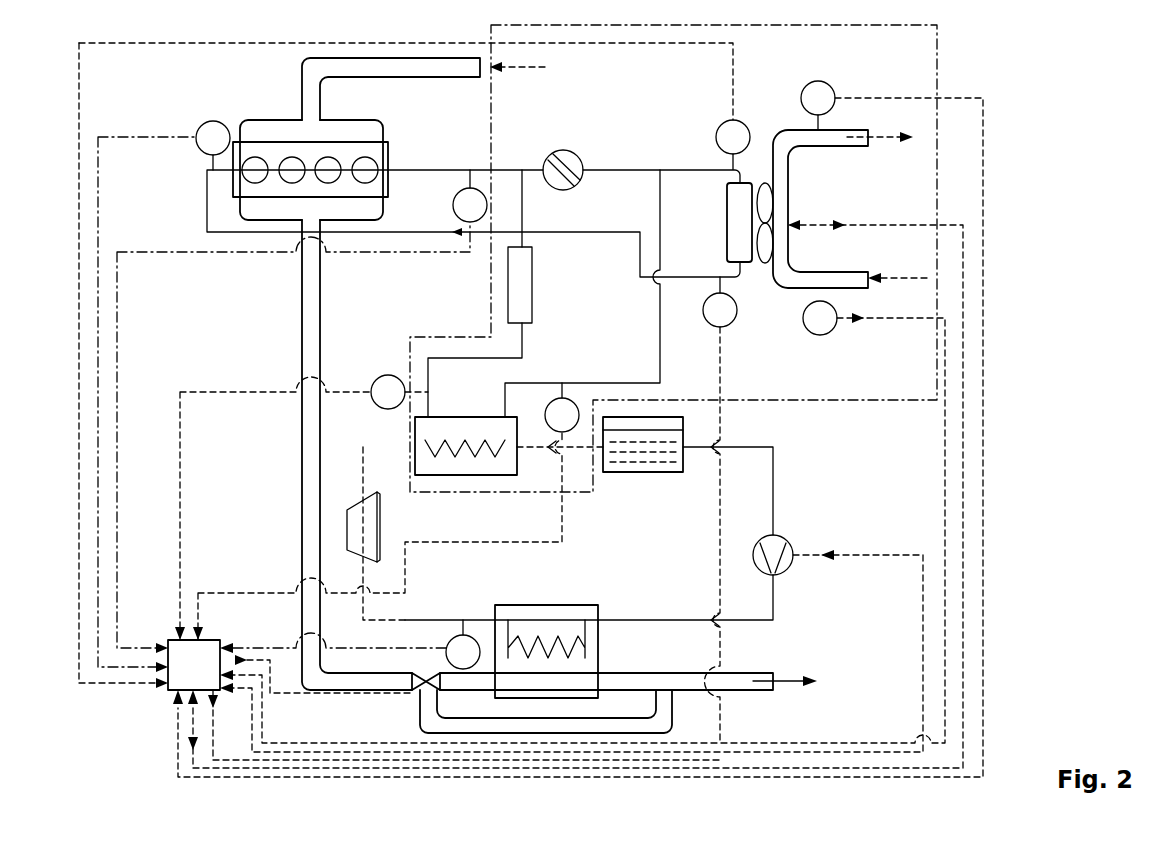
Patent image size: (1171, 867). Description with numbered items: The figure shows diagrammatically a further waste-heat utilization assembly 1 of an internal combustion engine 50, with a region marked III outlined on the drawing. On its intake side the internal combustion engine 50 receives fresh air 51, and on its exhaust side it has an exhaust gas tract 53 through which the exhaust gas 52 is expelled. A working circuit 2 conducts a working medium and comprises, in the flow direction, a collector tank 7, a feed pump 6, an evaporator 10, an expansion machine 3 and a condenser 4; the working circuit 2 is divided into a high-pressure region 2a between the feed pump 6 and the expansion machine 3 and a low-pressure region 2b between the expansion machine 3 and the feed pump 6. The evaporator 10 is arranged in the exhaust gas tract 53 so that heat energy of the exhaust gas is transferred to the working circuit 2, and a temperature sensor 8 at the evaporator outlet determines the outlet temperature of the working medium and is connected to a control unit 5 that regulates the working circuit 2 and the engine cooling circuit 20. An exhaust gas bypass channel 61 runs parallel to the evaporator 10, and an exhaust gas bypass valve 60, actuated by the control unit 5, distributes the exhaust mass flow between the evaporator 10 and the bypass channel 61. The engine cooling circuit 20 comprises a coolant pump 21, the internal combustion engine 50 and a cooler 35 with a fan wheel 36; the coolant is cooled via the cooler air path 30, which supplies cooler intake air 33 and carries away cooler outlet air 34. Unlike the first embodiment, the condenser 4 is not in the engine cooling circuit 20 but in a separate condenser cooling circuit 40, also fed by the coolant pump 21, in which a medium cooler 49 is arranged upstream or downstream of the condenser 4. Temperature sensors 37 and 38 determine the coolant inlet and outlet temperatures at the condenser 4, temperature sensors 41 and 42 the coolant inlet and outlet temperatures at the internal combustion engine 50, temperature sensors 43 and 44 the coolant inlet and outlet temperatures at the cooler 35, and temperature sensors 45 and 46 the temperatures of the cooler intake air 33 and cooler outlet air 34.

The waste-heat utilization assembly 1 is at (1010, 116).
The working circuit 2 is at (835, 600).
The high-pressure region 2a is at (430, 620).
The low-pressure region 2b is at (775, 477).
The expansion machine 3 is at (378, 510).
The condenser 4 is at (478, 417).
The control unit 5 is at (168, 642).
The feed pump 6 is at (786, 541).
The collector tank 7 is at (640, 472).
The temperature sensor 8 is at (475, 636).
The evaporator 10 is at (553, 605).
The engine cooling circuit 20 is at (656, 150).
The coolant pump 21 is at (563, 190).
The cooler air path 30 is at (826, 167).
The cooler intake air 33 is at (898, 278).
The cooler outlet air 34 is at (880, 135).
The cooler 35 is at (727, 222).
The fan wheel 36 is at (778, 196).
The temperature sensor 37 is at (388, 375).
The temperature sensor 38 is at (576, 403).
The condenser cooling circuit 40 is at (500, 322).
The temperature sensor 41 is at (453, 208).
The temperature sensor 42 is at (200, 126).
The temperature sensor 43 is at (708, 298).
The temperature sensor 44 is at (745, 124).
The temperature sensor 45 is at (833, 330).
The temperature sensor 46 is at (820, 80).
The medium cooler 49 is at (508, 280).
The internal combustion engine 50 is at (385, 142).
The fresh air 51 is at (525, 72).
The exhaust gas 52 is at (780, 672).
The exhaust gas tract 53 is at (302, 453).
The exhaust gas bypass valve 60 is at (410, 695).
The exhaust gas bypass channel 61 is at (628, 724).
The detail region III is at (940, 40).